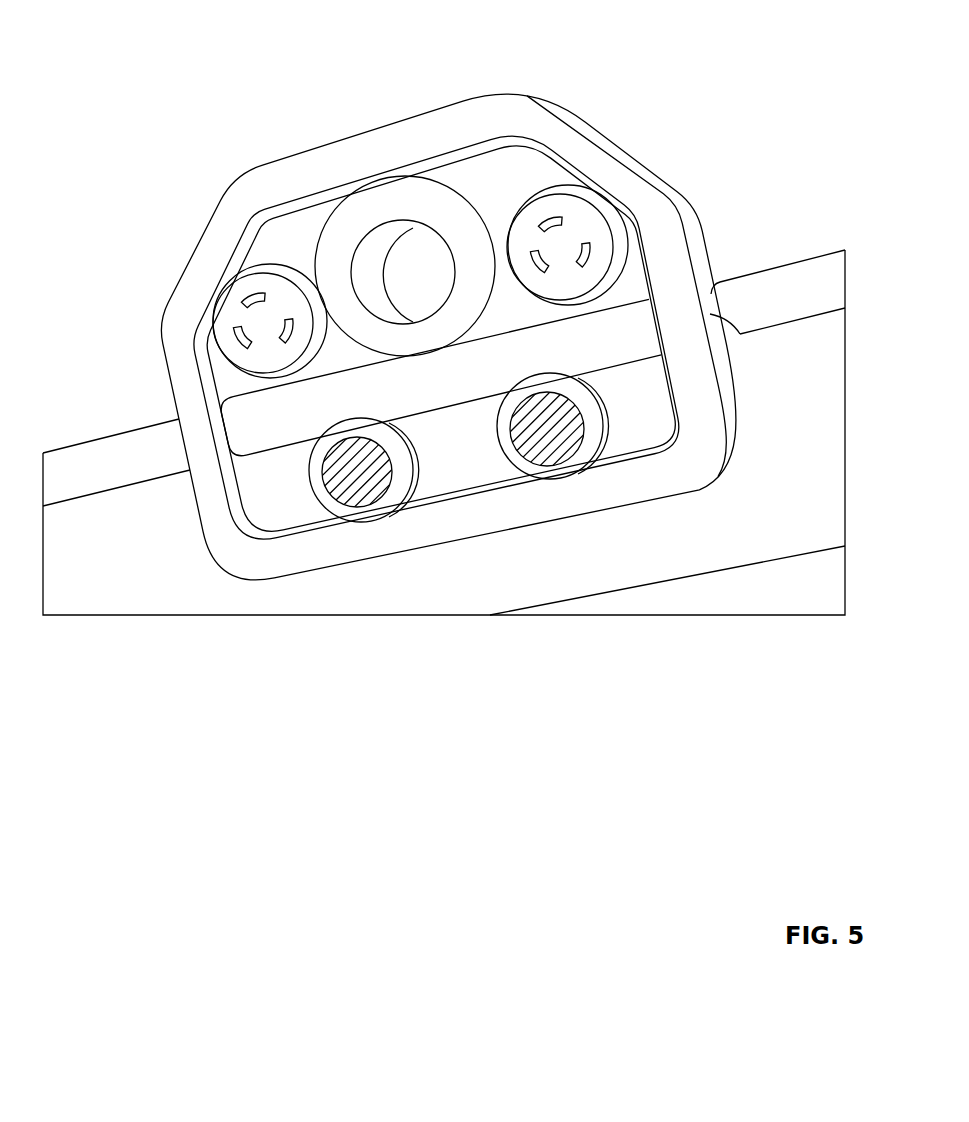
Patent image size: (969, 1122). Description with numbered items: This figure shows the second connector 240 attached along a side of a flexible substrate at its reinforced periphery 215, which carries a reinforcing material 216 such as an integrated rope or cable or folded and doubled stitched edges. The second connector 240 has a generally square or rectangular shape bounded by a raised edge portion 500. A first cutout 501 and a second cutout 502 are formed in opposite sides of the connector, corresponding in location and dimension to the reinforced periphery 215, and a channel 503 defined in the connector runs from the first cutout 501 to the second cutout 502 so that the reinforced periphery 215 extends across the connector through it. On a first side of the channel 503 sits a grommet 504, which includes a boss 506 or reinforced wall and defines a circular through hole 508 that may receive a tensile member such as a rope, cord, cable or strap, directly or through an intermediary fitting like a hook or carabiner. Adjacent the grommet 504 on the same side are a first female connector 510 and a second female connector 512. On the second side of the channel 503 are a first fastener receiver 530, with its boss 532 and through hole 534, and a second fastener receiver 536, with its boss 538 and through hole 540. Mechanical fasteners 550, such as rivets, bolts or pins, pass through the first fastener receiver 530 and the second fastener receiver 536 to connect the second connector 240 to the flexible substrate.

The second connector 240 is at (595, 30).
The reinforced periphery 215 is at (790, 530).
The reinforcing material 216 is at (130, 447).
The raised edge portion 500 is at (650, 220).
The first cutout 501 is at (743, 333).
The second cutout 502 is at (182, 457).
The channel 503 is at (270, 425).
The grommet 504 is at (366, 180).
The boss 506 is at (387, 203).
The through hole 508 is at (423, 270).
The first female connector 510 is at (245, 273).
The second female connector 512 is at (577, 227).
The first fastener receiver 530 is at (315, 508).
The boss 532 is at (362, 510).
The through hole 534 is at (385, 498).
The second fastener receiver 536 is at (558, 487).
The boss 538 is at (572, 467).
The through hole 540 is at (580, 455).
The mechanical fasteners 550 is at (353, 470).